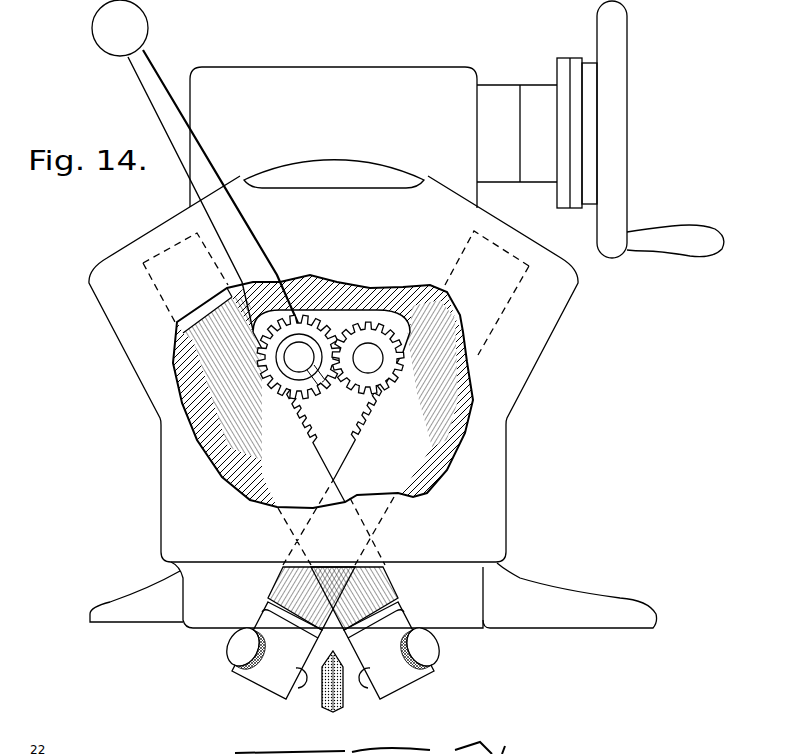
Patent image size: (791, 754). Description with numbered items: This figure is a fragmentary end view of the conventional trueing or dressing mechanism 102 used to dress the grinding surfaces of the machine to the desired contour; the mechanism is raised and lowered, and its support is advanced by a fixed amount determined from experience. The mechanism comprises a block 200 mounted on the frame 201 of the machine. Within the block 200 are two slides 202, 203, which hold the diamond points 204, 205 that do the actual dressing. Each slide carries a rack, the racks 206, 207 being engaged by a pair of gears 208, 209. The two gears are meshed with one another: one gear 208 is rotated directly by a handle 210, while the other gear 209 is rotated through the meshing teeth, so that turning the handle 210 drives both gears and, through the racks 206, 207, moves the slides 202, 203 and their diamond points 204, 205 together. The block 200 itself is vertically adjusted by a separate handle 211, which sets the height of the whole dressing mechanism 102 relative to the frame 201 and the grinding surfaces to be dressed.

The trueing or dressing mechanism 102 is at (373, 343).
The block 200 is at (512, 400).
The frame 201 is at (515, 583).
The slide 202 is at (267, 460).
The slide 203 is at (410, 448).
The diamond point 204 is at (309, 674).
The diamond point 205 is at (357, 682).
The rack 206 is at (280, 390).
The rack 207 is at (380, 413).
The gear 208 is at (268, 365).
The gear 209 is at (388, 369).
The handle 210 is at (162, 121).
The handle 211 is at (611, 251).